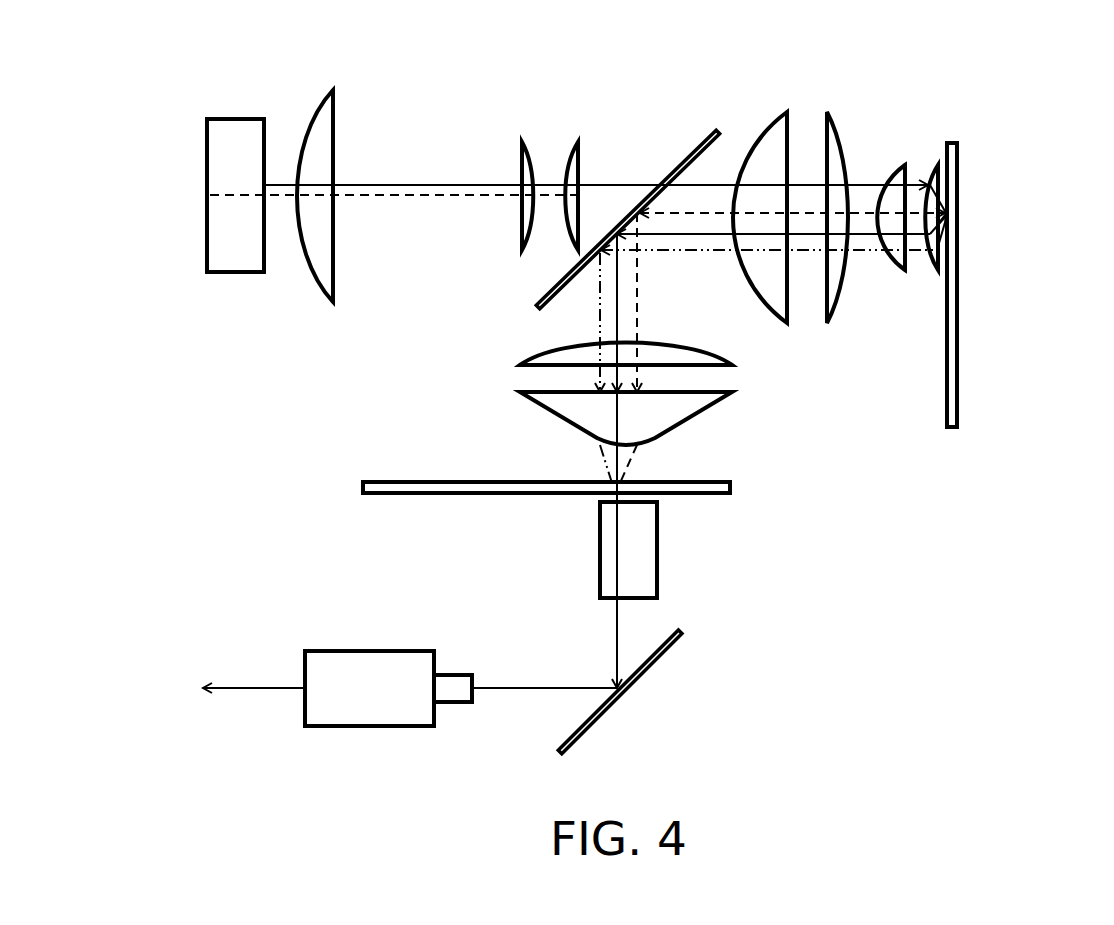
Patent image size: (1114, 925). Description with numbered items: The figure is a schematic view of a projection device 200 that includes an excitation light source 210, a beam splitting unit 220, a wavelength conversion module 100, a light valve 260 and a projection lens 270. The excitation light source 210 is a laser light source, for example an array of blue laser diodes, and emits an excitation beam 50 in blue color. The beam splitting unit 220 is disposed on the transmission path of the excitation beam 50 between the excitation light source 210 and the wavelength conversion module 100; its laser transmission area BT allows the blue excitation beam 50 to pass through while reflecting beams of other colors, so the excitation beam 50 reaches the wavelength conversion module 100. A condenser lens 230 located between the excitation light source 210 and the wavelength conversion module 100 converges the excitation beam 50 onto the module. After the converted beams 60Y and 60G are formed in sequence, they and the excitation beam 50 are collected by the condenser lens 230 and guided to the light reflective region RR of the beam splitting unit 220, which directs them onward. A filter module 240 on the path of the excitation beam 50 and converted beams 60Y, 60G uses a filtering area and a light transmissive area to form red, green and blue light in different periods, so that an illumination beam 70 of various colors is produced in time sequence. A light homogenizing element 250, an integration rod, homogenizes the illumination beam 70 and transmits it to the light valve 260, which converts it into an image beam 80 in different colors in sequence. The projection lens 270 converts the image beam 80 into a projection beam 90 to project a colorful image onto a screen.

The projection device 200 is at (167, 82).
The excitation light source 210 is at (235, 117).
The beam splitting unit 220 is at (633, 210).
The condenser lens 230 is at (888, 177).
The filter module 240 is at (363, 487).
The light homogenizing element 250 is at (657, 548).
The light valve 260 is at (608, 713).
The projection lens 270 is at (367, 727).
The wavelength conversion module 100 is at (1008, 187).
The excitation beam 50 is at (448, 183).
The converted beam 60Y is at (690, 213).
The converted beam 60G is at (867, 253).
The illumination beam 70 is at (617, 632).
The image beam 80 is at (517, 690).
The projection beam 90 is at (258, 690).
The laser transmission area BT is at (688, 152).
The light reflective region RR is at (575, 290).